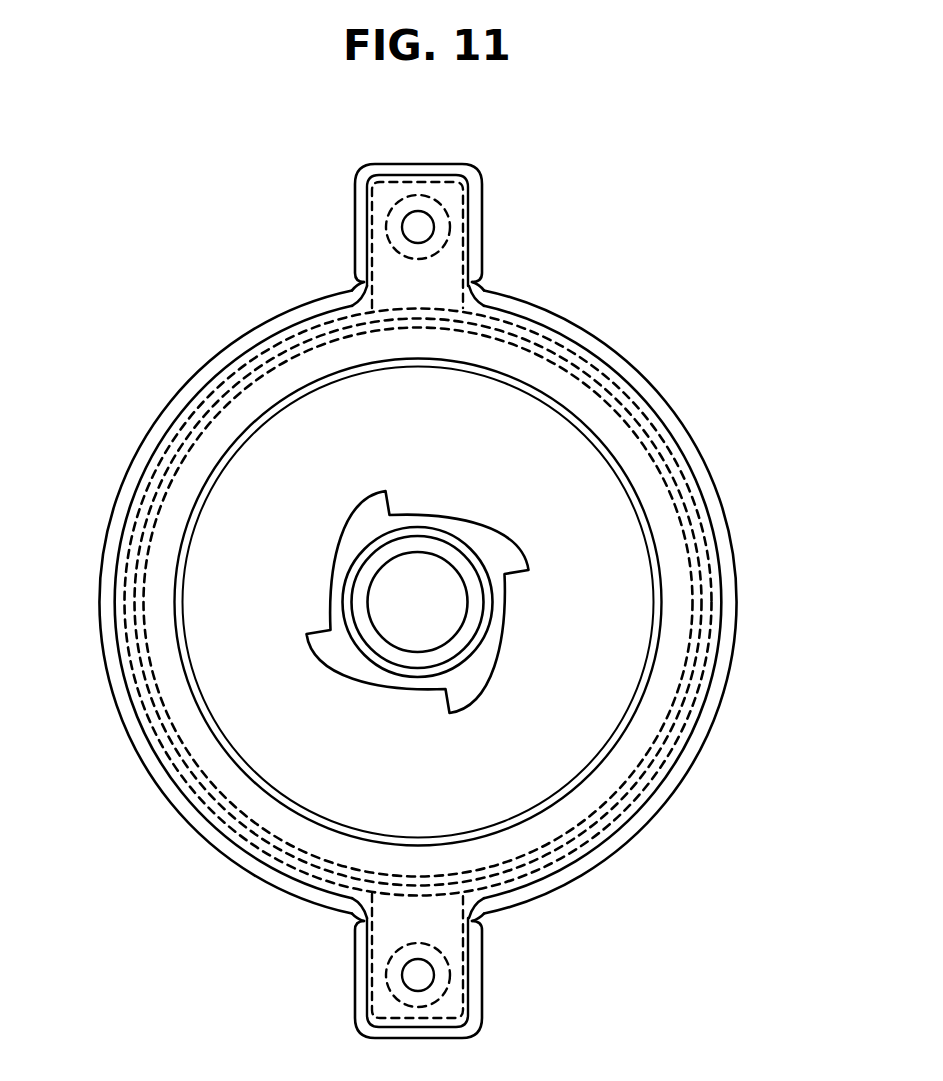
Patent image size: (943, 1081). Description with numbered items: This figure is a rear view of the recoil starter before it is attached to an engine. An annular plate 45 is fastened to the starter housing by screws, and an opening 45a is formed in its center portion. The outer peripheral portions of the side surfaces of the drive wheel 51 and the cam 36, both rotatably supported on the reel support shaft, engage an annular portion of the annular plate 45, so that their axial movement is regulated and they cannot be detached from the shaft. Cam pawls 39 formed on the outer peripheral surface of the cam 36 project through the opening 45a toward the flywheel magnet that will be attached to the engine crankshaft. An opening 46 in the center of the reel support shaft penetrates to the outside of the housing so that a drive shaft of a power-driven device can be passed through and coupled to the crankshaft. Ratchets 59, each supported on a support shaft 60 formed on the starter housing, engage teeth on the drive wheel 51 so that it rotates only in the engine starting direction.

The cam 36 is at (498, 635).
The cam pawls 39 is at (455, 715).
The annular plate 45 is at (627, 382).
The opening 45a is at (623, 483).
The opening 46 is at (405, 600).
The drive wheel 51 is at (143, 472).
The ratchets 59 is at (357, 255).
The support shaft 60 is at (482, 243).